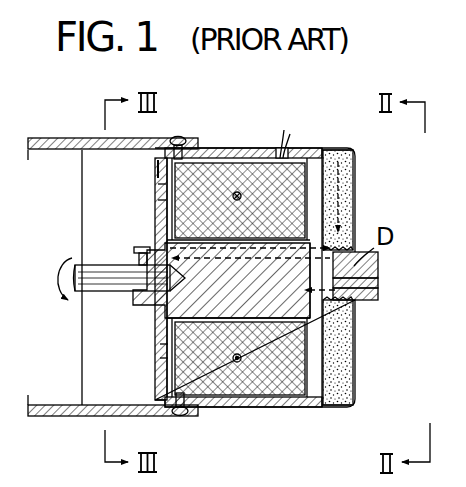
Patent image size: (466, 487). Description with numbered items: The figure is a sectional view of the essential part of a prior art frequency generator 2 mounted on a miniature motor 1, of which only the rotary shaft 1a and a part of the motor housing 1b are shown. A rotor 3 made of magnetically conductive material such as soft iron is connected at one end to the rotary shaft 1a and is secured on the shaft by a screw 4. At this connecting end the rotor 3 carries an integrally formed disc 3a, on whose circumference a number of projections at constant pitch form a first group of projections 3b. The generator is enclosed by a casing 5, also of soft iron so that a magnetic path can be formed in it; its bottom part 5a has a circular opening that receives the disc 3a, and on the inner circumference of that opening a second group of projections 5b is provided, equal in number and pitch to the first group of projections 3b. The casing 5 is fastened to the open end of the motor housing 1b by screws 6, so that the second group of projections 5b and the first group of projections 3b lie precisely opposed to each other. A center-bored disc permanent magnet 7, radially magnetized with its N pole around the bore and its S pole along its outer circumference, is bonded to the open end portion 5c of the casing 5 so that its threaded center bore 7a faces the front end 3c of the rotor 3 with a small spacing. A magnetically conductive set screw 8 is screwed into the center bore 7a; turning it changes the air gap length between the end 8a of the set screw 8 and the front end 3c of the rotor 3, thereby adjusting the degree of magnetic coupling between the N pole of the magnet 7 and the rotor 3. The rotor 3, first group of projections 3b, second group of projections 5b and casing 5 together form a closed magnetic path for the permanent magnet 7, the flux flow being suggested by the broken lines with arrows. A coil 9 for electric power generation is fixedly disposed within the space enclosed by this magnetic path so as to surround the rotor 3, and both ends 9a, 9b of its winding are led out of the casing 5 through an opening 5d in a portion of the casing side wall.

The miniature motor 1 is at (59, 193).
The rotary shaft 1a is at (101, 265).
The motor housing 1b is at (48, 138).
The frequency generator 2 is at (270, 410).
The rotor 3 is at (248, 292).
The disc 3a is at (156, 332).
The first group of projections 3b is at (160, 354).
The front end of the rotor 3c is at (314, 308).
The screw 4 is at (142, 247).
The casing 5 is at (228, 152).
The bottom part of the casing 5a is at (158, 164).
The second group of projections 5b is at (150, 187).
The open end portion of the casing 5c is at (321, 150).
The opening 5d is at (278, 148).
The screws 6 is at (178, 136).
The permanent magnet 7 is at (348, 362).
The center bore 7a is at (348, 292).
The set screw 8 is at (378, 258).
The end of the set screw 8a is at (372, 275).
The coil 9 is at (250, 172).
The end of the winding 9a is at (284, 130).
The end of the winding 9b is at (290, 134).